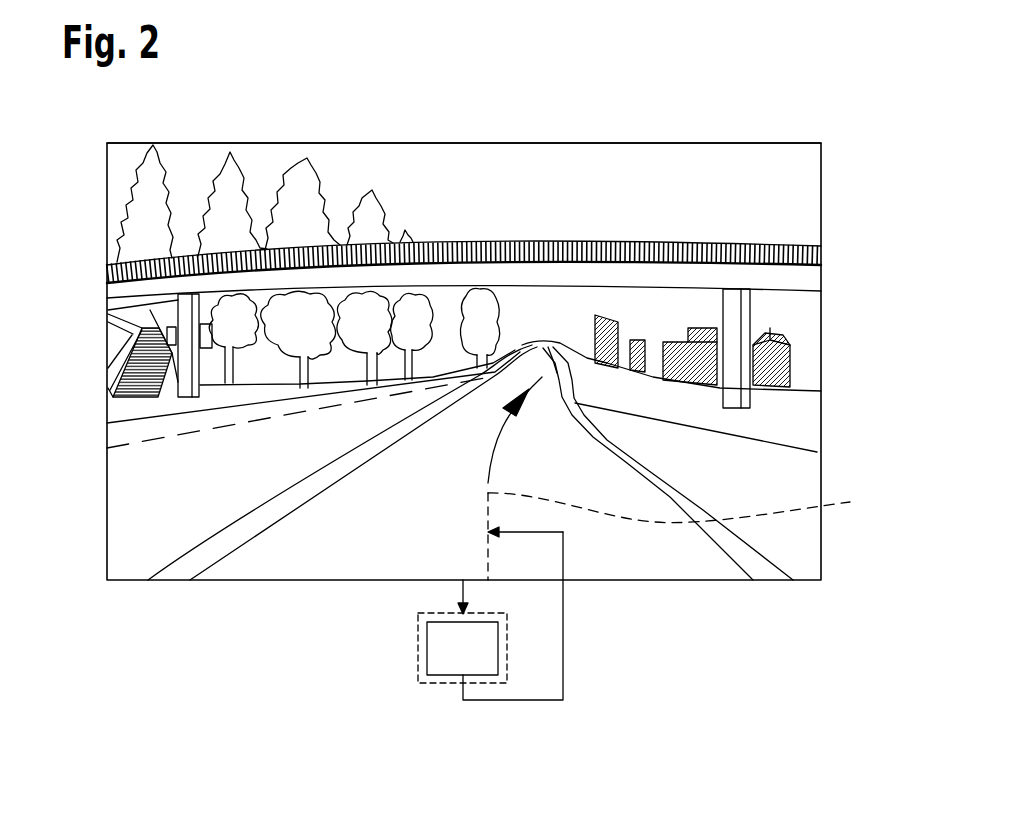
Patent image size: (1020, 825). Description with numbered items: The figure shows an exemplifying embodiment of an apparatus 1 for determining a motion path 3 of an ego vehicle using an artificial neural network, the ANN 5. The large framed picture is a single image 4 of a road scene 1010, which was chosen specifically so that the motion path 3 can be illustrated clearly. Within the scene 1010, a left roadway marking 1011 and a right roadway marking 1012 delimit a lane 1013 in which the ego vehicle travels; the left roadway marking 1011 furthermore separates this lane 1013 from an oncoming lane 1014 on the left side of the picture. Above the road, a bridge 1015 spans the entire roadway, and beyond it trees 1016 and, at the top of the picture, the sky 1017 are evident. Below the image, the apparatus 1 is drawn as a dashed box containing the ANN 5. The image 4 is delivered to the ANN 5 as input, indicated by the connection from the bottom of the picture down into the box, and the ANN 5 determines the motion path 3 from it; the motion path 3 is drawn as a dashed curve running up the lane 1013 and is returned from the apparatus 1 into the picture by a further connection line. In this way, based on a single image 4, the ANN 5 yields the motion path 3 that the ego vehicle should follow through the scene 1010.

The apparatus 1 is at (418, 632).
The motion path 3 is at (563, 680).
The image 4 is at (488, 328).
The ANN 5 is at (427, 660).
The scene 1010 is at (464, 361).
The left roadway marking 1011 is at (178, 572).
The right roadway marking 1012 is at (763, 570).
The lane 1013 is at (283, 537).
The oncoming lane 1014 is at (142, 527).
The bridge 1015 is at (634, 280).
The trees 1016 is at (252, 183).
The sky 1017 is at (488, 198).